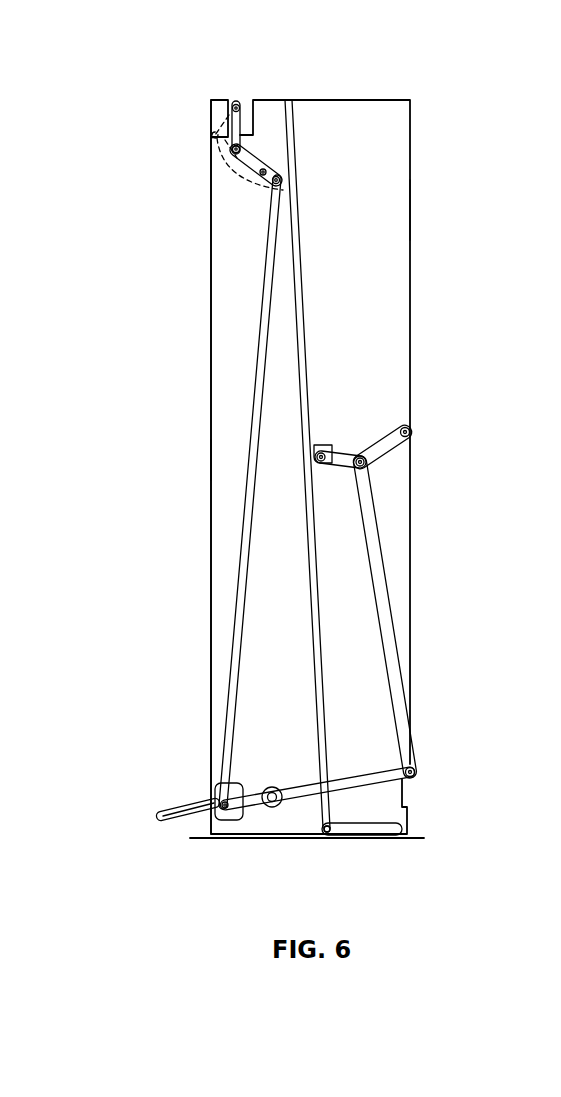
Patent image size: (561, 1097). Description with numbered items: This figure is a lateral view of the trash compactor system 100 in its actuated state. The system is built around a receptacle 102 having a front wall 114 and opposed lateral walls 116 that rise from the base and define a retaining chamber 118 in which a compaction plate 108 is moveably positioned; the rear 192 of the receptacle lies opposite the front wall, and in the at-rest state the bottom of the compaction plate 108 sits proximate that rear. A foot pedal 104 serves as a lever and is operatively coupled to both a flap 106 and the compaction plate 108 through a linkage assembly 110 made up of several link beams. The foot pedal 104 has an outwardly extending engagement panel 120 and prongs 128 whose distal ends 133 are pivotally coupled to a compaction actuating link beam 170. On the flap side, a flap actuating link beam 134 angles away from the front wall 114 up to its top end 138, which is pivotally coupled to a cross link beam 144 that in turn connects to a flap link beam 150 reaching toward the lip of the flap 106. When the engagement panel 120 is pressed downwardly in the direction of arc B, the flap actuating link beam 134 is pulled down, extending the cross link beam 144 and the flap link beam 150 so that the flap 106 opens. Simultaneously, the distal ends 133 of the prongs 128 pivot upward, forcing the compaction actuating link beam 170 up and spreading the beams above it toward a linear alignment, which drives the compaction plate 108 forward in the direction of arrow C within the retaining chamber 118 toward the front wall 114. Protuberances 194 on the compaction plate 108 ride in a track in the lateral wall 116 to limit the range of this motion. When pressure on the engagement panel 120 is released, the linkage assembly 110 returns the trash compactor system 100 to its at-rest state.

The trash compactor system 100 is at (175, 82).
The receptacle 102 is at (200, 245).
The foot pedal 104 is at (148, 820).
The flap 106 is at (217, 160).
The compaction plate 108 is at (312, 305).
The linkage assembly 110 is at (319, 492).
The front wall 114 is at (210, 468).
The lateral walls 116 is at (393, 220).
The retaining chamber 118 is at (230, 290).
The engagement panel 120 is at (167, 807).
The prongs 128 is at (350, 782).
The distal ends 133 is at (405, 778).
The flap actuating link beam 134 is at (243, 527).
The top end 138 is at (290, 188).
The cross link beam 144 is at (250, 155).
The flap link beam 150 is at (238, 104).
The compaction actuating link beam 170 is at (392, 640).
The rear 192 is at (425, 774).
The protuberances 194 is at (338, 840).
The arc B is at (170, 710).
The arrow C is at (257, 603).